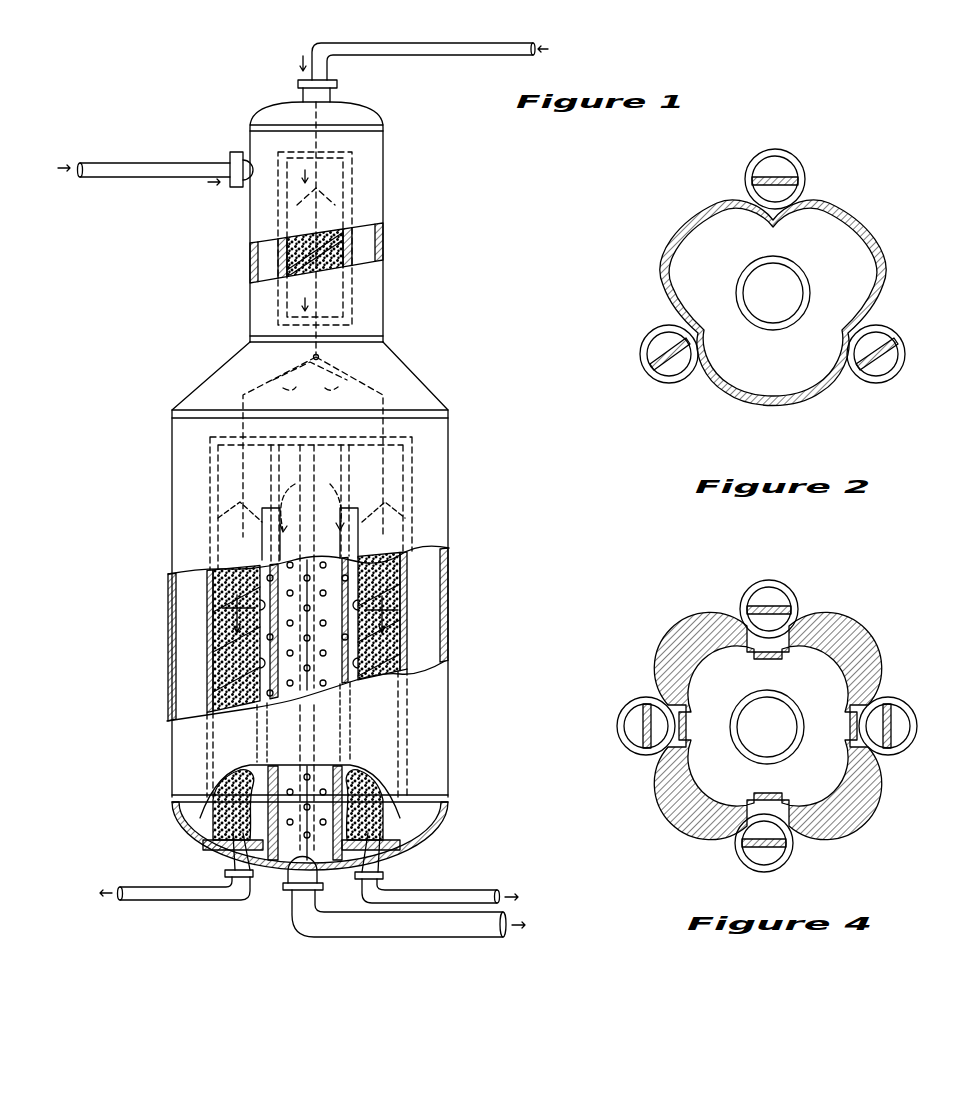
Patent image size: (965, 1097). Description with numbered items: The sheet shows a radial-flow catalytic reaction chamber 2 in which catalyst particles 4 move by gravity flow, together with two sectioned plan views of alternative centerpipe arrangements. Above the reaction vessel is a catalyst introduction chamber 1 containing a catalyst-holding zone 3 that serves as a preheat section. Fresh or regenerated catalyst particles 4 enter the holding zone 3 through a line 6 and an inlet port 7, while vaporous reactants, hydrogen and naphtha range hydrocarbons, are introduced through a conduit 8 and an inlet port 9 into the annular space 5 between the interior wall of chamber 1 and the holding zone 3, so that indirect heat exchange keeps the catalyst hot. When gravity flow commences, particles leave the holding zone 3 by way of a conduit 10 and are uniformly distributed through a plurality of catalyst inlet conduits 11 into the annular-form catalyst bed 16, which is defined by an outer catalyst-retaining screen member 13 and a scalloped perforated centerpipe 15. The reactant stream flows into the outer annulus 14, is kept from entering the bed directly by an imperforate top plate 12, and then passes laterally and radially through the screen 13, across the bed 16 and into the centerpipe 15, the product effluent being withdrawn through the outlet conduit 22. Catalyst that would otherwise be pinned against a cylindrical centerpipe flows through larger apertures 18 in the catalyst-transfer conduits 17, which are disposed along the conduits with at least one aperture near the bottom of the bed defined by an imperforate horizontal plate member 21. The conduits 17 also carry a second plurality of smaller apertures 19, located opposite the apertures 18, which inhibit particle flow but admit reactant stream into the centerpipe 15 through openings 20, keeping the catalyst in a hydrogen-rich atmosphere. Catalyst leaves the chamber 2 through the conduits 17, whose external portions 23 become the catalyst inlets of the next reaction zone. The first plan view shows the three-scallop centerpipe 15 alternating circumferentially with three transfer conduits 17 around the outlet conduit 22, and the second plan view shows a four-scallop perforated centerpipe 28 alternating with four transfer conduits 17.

In FIG. 1, the catalyst introduction chamber 1 is at (383, 163).
In FIG. 1, the radial-flow catalytic reaction chamber 2 is at (172, 463).
In FIG. 1, the catalyst-holding zone 3 is at (350, 247).
In FIG. 1, the catalyst particles 4 is at (330, 232).
In FIG. 1, the annular space 5 is at (270, 263).
In FIG. 1, the line 6 is at (407, 57).
In FIG. 1, the inlet port 7 is at (303, 80).
In FIG. 1, the conduit 8 is at (140, 177).
In FIG. 1, the inlet port 9 is at (232, 152).
In FIG. 1, the conduit 10 is at (317, 315).
In FIG. 1, the catalyst inlet conduits 11 is at (313, 446).
In FIG. 1, the imperforate top plate 12 is at (390, 437).
In FIG. 1, the outer catalyst-retaining screen member 13 is at (191, 657).
In FIG. 1, the outer annulus 14 is at (433, 615).
In FIG. 1, the scalloped perforated centerpipe 15 is at (338, 530).
In FIG. 2, the scalloped perforated centerpipe 15 is at (669, 216).
In FIG. 1, the annular-form catalyst bed 16 is at (383, 530).
In FIG. 1, the catalyst-transfer conduits 17 is at (281, 499).
In FIG. 2, the catalyst-transfer conduits 17 is at (788, 150).
In FIG. 4, the catalyst-transfer conduits 17 is at (782, 582).
In FIG. 1, the apertures 18 is at (260, 550).
In FIG. 1, the second plurality of apertures 19 is at (345, 578).
In FIG. 1, the openings 20 is at (290, 653).
In FIG. 1, the imperforate horizontal plate member 21 is at (225, 857).
In FIG. 1, the product effluent outlet conduit 22 is at (297, 927).
In FIG. 2, the product effluent outlet conduit 22 is at (790, 260).
In FIG. 4, the product effluent outlet conduit 22 is at (758, 760).
In FIG. 1, the external portions of transfer conduits 23 is at (173, 902).
In FIG. 4, the four-scallop perforated centerpipe 28 is at (882, 643).